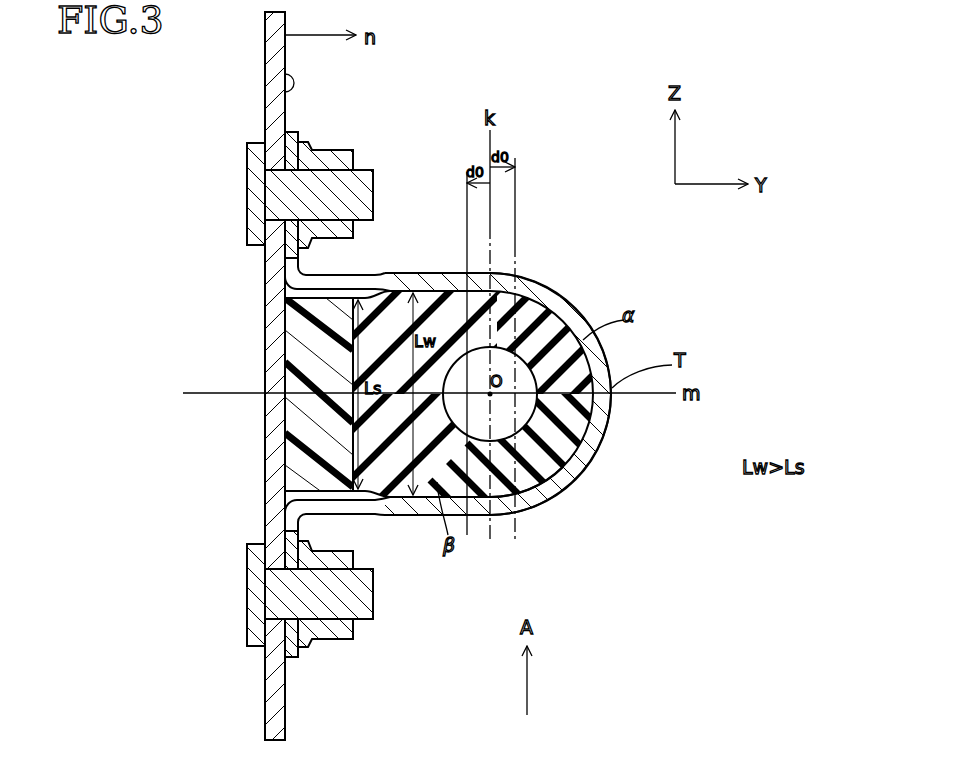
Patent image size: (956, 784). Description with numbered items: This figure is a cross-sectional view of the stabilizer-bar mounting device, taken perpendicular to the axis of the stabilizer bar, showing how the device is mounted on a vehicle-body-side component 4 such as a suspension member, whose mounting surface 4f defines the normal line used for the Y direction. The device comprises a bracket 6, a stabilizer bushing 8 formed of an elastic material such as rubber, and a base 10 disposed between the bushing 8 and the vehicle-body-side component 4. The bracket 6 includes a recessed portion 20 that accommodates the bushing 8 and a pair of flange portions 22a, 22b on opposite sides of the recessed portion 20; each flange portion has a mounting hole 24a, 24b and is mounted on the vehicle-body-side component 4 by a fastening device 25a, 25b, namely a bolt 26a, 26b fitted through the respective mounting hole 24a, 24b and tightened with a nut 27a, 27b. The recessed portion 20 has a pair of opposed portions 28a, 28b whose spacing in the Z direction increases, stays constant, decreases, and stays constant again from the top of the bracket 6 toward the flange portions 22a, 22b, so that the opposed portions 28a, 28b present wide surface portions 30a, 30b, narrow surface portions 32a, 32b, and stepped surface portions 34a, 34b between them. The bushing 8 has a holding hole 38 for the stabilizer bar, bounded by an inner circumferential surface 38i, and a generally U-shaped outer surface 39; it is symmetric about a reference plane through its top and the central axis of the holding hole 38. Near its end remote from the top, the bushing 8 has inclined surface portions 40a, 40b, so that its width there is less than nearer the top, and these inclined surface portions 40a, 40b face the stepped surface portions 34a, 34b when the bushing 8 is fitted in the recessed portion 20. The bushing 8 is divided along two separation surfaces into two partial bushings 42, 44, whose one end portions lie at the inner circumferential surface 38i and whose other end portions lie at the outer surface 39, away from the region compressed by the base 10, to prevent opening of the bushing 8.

The vehicle-body-side component 4 is at (278, 53).
The mounting surface 4f is at (283, 85).
The bracket 6 is at (616, 437).
The stabilizer bushing 8 is at (558, 481).
The base 10 is at (283, 463).
The recessed portion 20 is at (628, 349).
The flange portion 22a is at (297, 123).
The flange portion 22b is at (296, 669).
The mounting hole 24a is at (290, 183).
The mounting hole 24b is at (290, 606).
The fastening device 25a is at (380, 146).
The fastening device 25b is at (353, 699).
The bolt 26a is at (356, 193).
The bolt 26b is at (317, 606).
The nut 27a is at (328, 162).
The nut 27b is at (337, 630).
The opposed portion 28a is at (539, 271).
The opposed portion 28b is at (541, 513).
The wide surface portion 30a is at (508, 272).
The wide surface portion 30b is at (470, 513).
The narrow surface portion 32a is at (297, 270).
The narrow surface portion 32b is at (295, 557).
The stepped surface portion 34a is at (372, 288).
The stepped surface portion 34b is at (370, 501).
The holding hole 38 is at (477, 292).
The inner circumferential surface 38i is at (506, 357).
The outer surface 39 is at (561, 296).
The inclined surface portion 40a is at (338, 278).
The inclined surface portion 40b is at (362, 513).
The partial bushing 42 is at (532, 480).
The partial bushing 44 is at (418, 286).